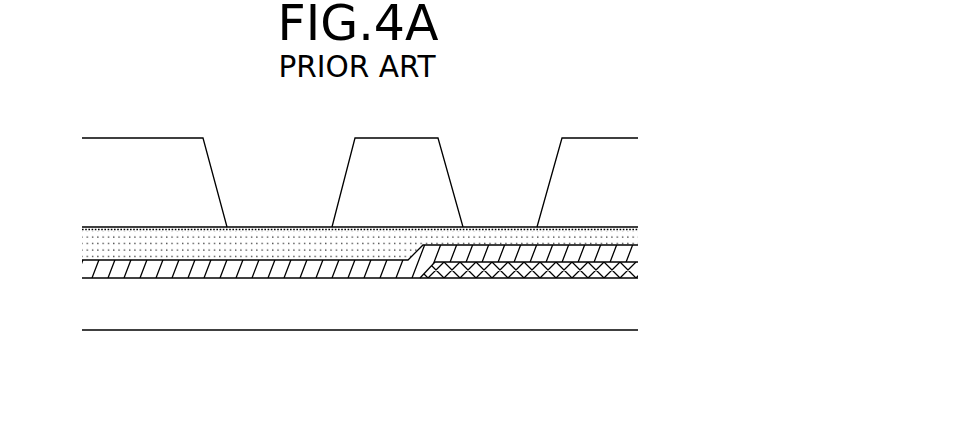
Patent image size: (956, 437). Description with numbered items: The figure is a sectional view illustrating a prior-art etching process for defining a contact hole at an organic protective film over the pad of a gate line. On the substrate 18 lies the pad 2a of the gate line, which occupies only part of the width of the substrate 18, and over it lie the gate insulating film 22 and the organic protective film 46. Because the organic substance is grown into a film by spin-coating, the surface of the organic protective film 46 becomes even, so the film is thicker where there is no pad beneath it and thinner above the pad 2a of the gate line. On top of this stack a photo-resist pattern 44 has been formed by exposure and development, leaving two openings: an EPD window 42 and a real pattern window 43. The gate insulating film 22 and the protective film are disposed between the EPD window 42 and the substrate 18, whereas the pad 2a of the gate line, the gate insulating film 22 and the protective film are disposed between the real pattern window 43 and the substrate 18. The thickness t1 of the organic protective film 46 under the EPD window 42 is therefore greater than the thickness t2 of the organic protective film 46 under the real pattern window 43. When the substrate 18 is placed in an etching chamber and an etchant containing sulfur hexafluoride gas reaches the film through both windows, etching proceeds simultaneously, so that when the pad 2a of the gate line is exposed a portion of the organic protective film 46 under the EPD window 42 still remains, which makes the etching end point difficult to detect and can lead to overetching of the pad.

The substrate 18 is at (563, 300).
The gate insulating film 22 is at (312, 265).
The pad of the gate line 2a is at (460, 268).
The organic protective film 46 is at (245, 252).
The EPD window 42 is at (253, 170).
The real pattern window 43 is at (512, 173).
The photo-resist pattern 44 is at (583, 143).
The thickness of the organic protective film under the EPD window t1 is at (279, 310).
The thickness of the organic protective film under the real pattern window t2 is at (489, 292).